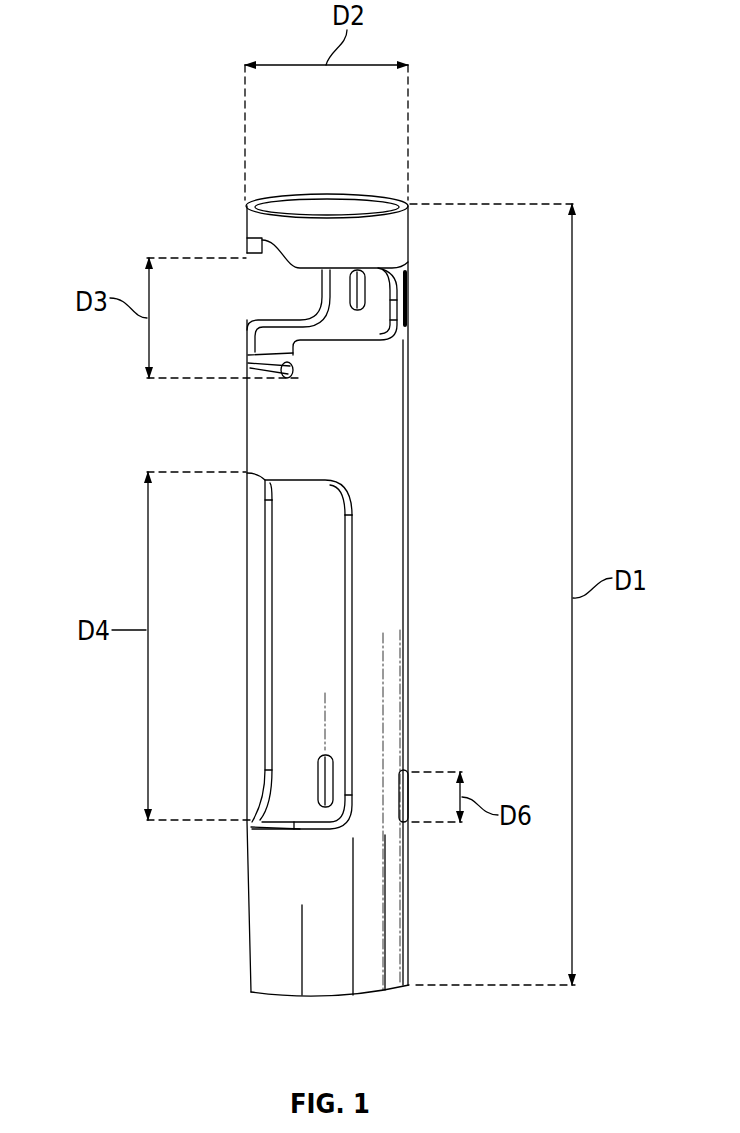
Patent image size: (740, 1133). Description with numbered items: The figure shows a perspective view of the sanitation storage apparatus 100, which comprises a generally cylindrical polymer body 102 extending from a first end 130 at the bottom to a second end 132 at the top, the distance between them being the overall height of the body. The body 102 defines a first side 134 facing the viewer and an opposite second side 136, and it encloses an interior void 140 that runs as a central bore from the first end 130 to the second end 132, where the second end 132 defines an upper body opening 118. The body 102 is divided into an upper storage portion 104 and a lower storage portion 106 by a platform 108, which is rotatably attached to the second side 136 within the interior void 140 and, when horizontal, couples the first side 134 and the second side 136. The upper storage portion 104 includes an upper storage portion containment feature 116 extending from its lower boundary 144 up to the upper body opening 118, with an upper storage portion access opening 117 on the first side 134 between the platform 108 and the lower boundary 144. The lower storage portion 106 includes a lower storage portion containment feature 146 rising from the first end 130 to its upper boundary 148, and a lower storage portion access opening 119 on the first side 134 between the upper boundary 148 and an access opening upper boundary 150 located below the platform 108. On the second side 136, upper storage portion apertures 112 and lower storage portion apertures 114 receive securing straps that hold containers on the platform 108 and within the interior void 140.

The sanitation storage apparatus 100 is at (548, 95).
The body 102 is at (380, 408).
The upper storage portion 104 is at (240, 367).
The lower storage portion 106 is at (235, 922).
The platform 108 is at (258, 365).
The upper storage portion apertures 112 is at (365, 285).
The lower storage portion apertures 114 is at (320, 800).
The upper storage portion containment feature 116 is at (257, 228).
The upper storage portion access opening 117 is at (252, 305).
The upper body opening 118 is at (360, 208).
The lower storage portion access opening 119 is at (295, 655).
The first end 130 is at (370, 997).
The second end 132 is at (265, 198).
The first side 134 is at (140, 540).
The second side 136 is at (445, 555).
The interior void 140 is at (300, 552).
The lower boundary 144 is at (263, 252).
The lower storage portion containment feature 146 is at (298, 944).
The lower storage containment feature upper boundary 148 is at (298, 832).
The access opening upper boundary 150 is at (300, 477).